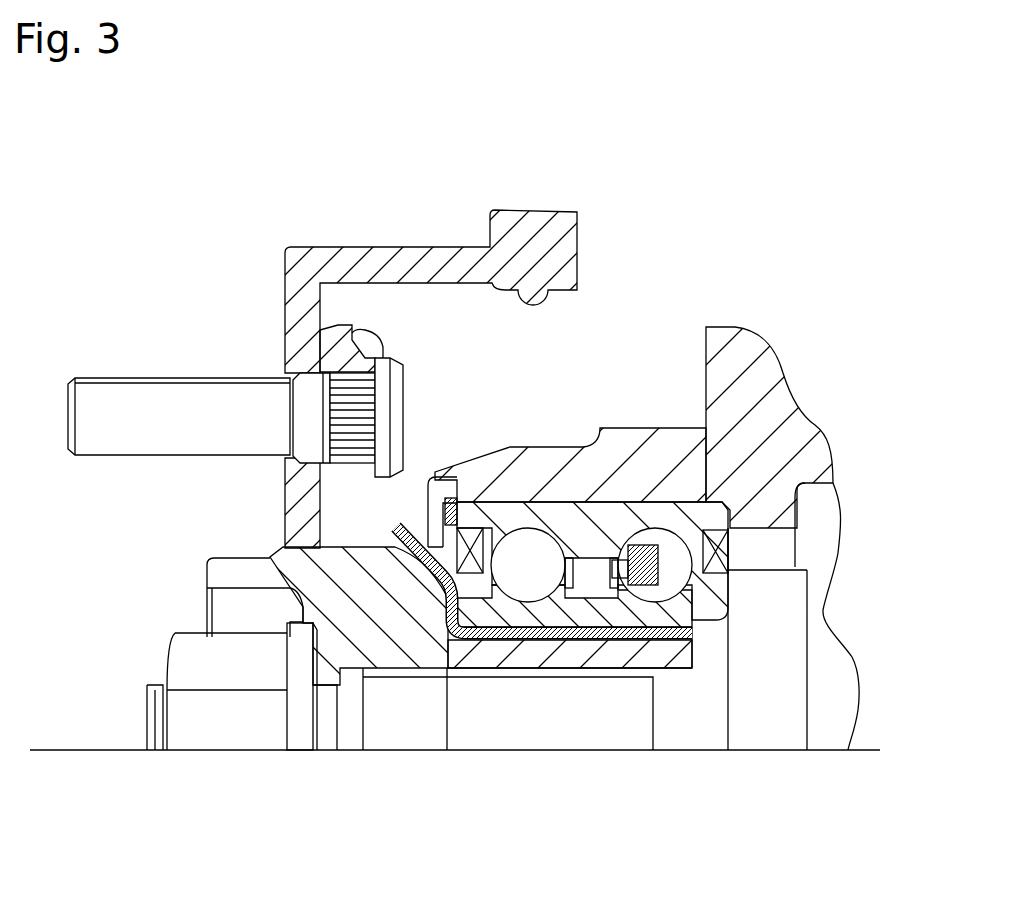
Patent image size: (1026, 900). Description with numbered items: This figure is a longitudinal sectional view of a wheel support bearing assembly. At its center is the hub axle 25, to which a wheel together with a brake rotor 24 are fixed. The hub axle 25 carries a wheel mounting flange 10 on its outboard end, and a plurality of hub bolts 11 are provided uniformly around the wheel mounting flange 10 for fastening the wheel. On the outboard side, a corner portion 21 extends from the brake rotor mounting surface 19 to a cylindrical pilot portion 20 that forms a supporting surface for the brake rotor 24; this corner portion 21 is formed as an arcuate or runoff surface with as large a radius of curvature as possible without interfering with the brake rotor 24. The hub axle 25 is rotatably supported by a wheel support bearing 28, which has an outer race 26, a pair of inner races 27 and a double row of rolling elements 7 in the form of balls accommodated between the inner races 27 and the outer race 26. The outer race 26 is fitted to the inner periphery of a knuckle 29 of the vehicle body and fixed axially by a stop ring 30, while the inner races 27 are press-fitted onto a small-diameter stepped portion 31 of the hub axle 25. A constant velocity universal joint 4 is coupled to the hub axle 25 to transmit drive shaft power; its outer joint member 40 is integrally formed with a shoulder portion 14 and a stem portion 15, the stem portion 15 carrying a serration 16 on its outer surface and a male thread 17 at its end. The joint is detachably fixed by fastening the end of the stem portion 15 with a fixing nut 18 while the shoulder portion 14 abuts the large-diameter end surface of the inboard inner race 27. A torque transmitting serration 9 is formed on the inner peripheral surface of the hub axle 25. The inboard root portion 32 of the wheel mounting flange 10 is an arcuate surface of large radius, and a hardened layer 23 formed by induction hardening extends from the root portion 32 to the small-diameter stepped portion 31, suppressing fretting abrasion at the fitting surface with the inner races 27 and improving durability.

The constant velocity universal joint 4 is at (828, 566).
The rolling elements 7 is at (528, 587).
The serration 9 is at (447, 747).
The wheel mounting flange 10 is at (335, 320).
The hub bolts 11 is at (95, 390).
The shoulder portion 14 is at (777, 707).
The stem portion 15 is at (412, 734).
The serration 16 is at (388, 652).
The male thread 17 is at (160, 688).
The fixing nut 18 is at (195, 735).
The brake rotor mounting surface 19 is at (337, 343).
The cylindrical pilot portion 20 is at (285, 565).
The corner portion 21 is at (460, 503).
The hardened layer 23 is at (453, 580).
The brake rotor 24 is at (392, 257).
The hub axle 25 is at (260, 573).
The outer race 26 is at (603, 517).
The inner races 27 is at (493, 607).
The wheel support bearing 28 is at (420, 550).
The knuckle 29 is at (552, 455).
The stop ring 30 is at (452, 495).
The small-diameter stepped portion 31 is at (690, 600).
The inboard root portion 32 is at (353, 565).
The outer joint member 40 is at (778, 672).